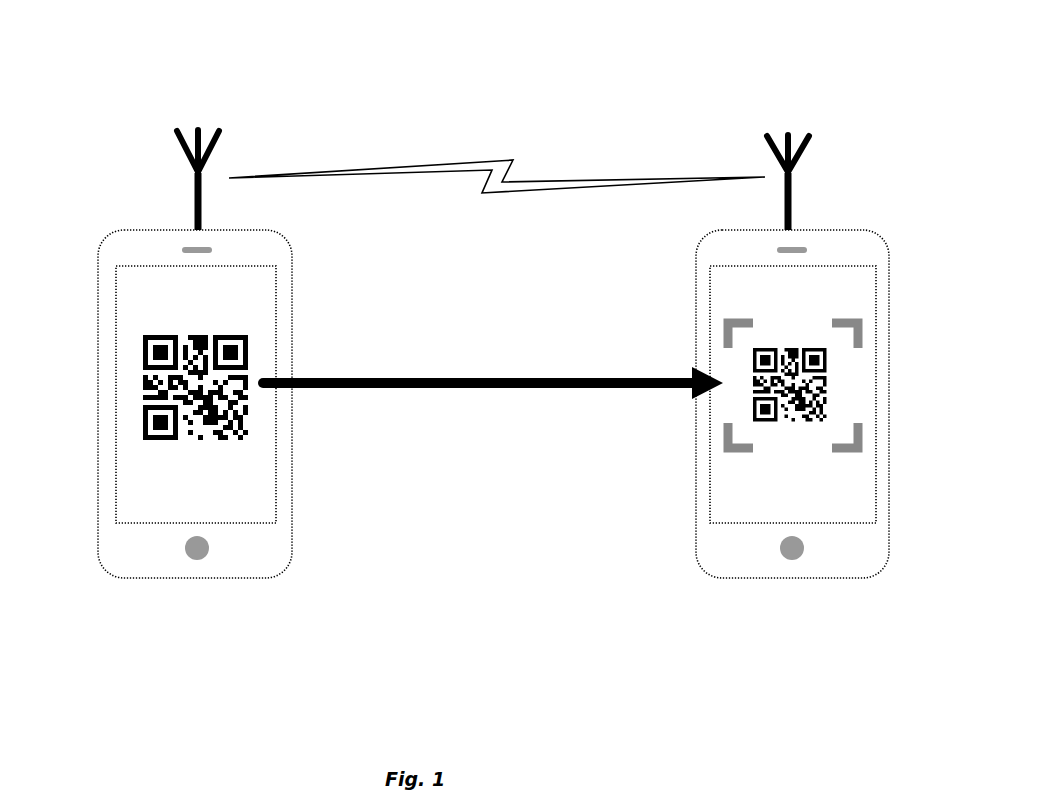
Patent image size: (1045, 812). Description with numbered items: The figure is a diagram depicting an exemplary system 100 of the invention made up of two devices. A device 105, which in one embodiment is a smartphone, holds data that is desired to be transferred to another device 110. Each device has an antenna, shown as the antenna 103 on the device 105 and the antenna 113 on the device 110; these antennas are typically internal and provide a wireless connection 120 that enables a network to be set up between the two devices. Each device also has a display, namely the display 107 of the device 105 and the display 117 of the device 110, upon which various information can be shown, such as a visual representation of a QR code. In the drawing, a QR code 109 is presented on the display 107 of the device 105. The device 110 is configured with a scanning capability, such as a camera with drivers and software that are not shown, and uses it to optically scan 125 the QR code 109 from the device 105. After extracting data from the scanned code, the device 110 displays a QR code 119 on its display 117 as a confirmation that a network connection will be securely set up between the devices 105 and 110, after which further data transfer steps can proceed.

The system 100 is at (500, 28).
The antenna 103 is at (221, 142).
The device 105 is at (163, 229).
The display 107 is at (144, 268).
The QR code 109 is at (144, 348).
The device 110 is at (840, 230).
The antenna 113 is at (811, 143).
The display 117 is at (848, 268).
The QR code 119 is at (828, 395).
The wireless connection 120 is at (492, 160).
The optical scan 125 is at (514, 377).